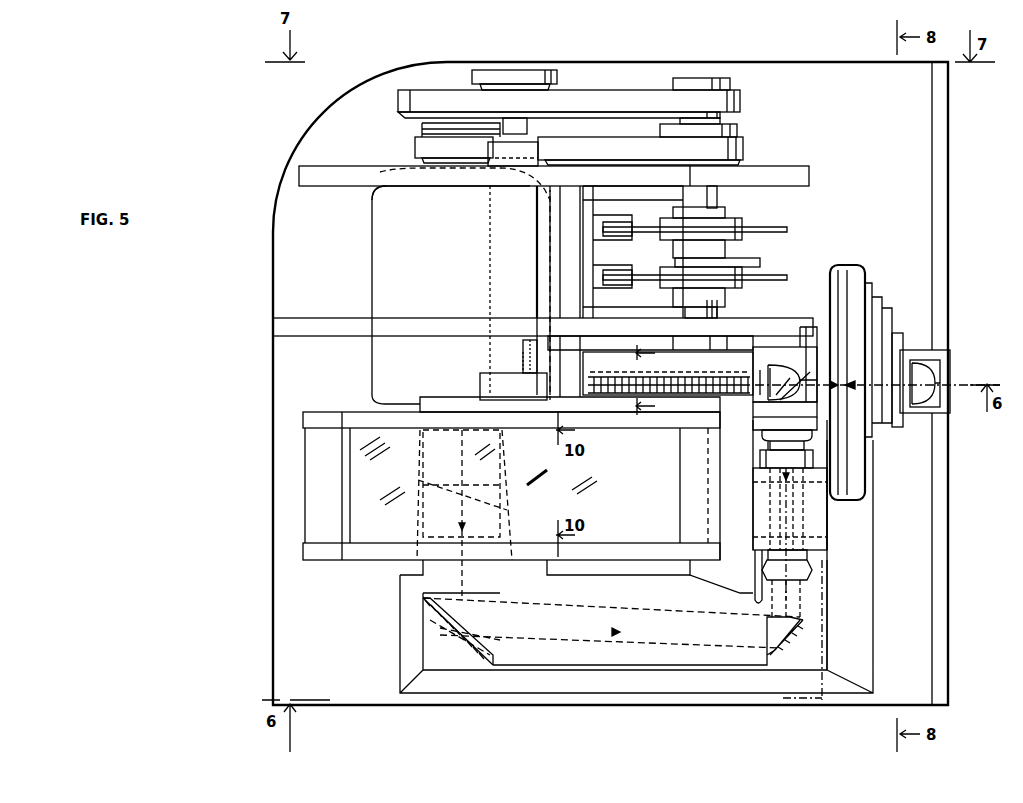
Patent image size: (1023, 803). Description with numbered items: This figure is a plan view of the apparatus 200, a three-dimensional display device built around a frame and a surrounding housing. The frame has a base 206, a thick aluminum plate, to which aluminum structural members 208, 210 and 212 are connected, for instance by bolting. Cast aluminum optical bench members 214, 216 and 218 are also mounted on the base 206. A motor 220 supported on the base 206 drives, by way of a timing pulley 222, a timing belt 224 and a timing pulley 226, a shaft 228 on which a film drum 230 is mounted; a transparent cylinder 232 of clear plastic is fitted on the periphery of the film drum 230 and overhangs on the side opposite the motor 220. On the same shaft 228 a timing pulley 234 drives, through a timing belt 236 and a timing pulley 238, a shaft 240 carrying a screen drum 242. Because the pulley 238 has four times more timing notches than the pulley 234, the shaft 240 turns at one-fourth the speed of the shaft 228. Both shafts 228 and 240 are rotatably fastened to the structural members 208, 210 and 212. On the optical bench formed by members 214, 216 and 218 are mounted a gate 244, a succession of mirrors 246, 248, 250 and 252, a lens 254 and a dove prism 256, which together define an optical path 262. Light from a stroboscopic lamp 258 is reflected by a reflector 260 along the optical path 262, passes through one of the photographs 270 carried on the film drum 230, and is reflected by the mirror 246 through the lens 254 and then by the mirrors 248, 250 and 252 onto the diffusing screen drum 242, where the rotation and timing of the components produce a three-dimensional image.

The apparatus 200 is at (260, 263).
The base 206 is at (280, 418).
The structural member 208 is at (272, 330).
The structural member 210 is at (298, 170).
The structural member 212 is at (570, 250).
The optical bench member 214 is at (632, 584).
The optical bench member 216 is at (460, 661).
The optical bench member 218 is at (753, 406).
The motor 220 is at (445, 277).
The timing pulley 222 is at (415, 135).
The timing belt 224 is at (590, 147).
The timing pulley 226 is at (750, 135).
The shaft 228 is at (722, 122).
The film drum 230 is at (806, 313).
The transparent cylinder 232 is at (805, 345).
The timing pulley 234 is at (732, 88).
The timing belt 236 is at (628, 100).
The timing pulley 238 is at (570, 88).
The shaft 240 is at (527, 128).
The screen drum 242 is at (355, 410).
The gate 244 is at (790, 405).
The mirror 246 is at (785, 380).
The mirror 248 is at (800, 618).
The mirror 250 is at (487, 655).
The mirror 252 is at (487, 473).
The lens 254 is at (760, 461).
The dove prism 256 is at (768, 520).
The stroboscopic lamp 258 is at (905, 355).
The reflector 260 is at (922, 407).
The optical path 262 is at (786, 614).
The photograph 270 is at (724, 380).